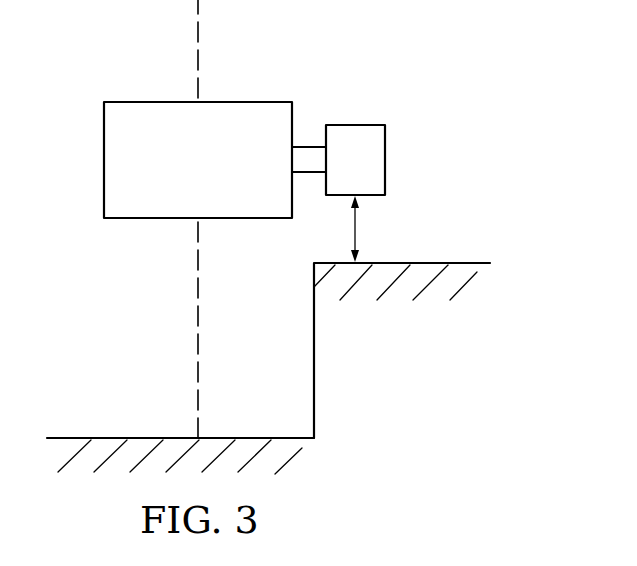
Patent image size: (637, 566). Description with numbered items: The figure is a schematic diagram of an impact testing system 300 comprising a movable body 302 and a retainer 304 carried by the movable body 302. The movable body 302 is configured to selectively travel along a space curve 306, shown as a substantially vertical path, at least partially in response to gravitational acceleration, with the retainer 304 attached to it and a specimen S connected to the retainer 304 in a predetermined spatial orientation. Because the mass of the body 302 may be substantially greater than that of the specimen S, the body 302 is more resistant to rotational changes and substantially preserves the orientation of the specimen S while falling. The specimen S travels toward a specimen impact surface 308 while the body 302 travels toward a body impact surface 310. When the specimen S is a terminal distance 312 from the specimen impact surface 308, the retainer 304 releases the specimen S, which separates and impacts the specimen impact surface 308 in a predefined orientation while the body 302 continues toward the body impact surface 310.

The impact testing system 300 is at (112, 63).
The movable body 302 is at (220, 176).
The retainer 304 is at (307, 145).
The space curve 306 is at (197, 312).
The specimen impact surface 308 is at (465, 262).
The body impact surface 310 is at (140, 437).
The terminal distance 312 is at (357, 228).
The specimen S is at (395, 159).